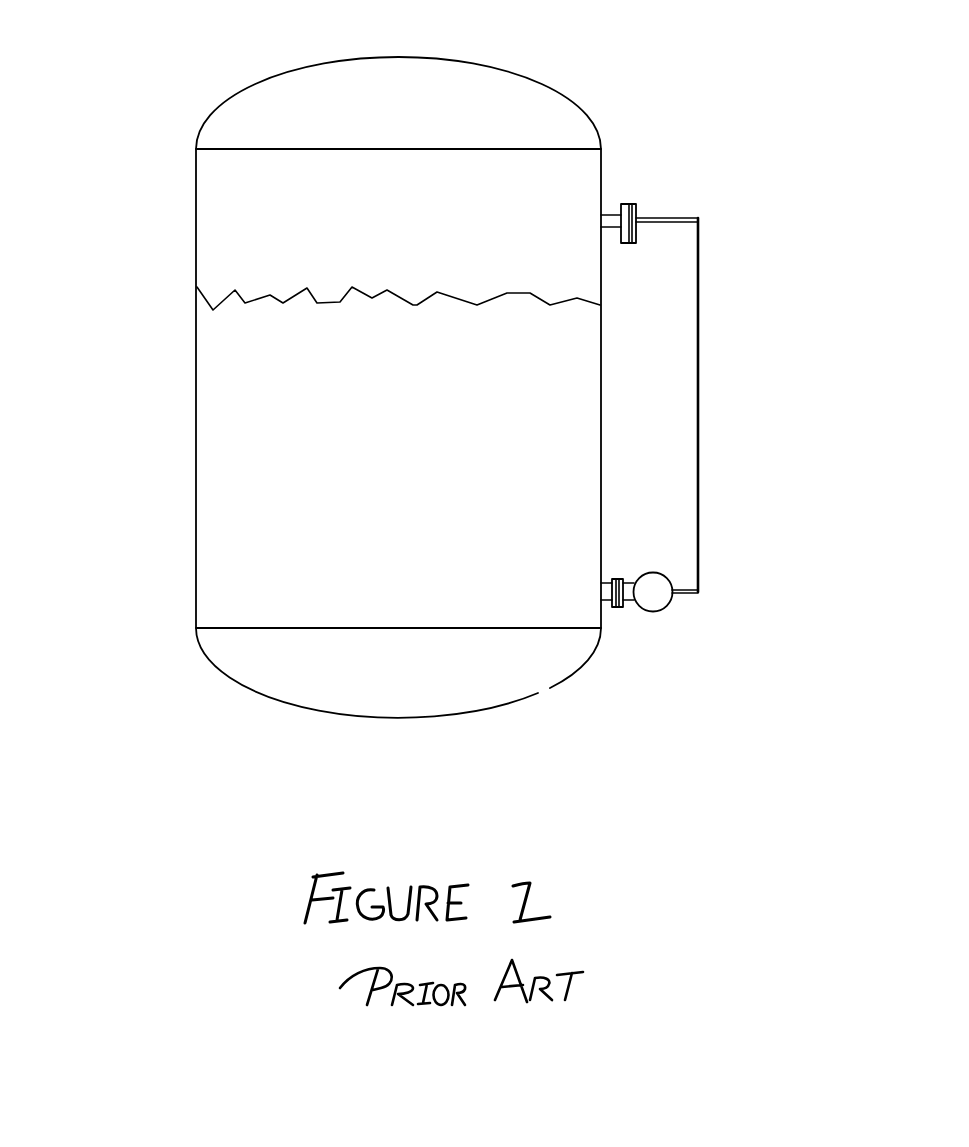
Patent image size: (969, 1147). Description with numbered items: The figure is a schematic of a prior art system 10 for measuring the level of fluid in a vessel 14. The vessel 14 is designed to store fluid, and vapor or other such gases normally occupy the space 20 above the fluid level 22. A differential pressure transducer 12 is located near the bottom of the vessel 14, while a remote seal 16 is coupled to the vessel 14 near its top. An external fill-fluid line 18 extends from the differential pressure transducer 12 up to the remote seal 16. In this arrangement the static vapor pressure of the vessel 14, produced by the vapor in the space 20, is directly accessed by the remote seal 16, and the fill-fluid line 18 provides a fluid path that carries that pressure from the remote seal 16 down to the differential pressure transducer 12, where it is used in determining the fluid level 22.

The system 10 is at (132, 60).
The differential pressure transducer 12 is at (652, 602).
The vessel 14 is at (202, 502).
The remote seal 16 is at (687, 193).
The external fill-fluid line 18 is at (700, 452).
The space 20 is at (217, 223).
The fluid level 22 is at (198, 304).